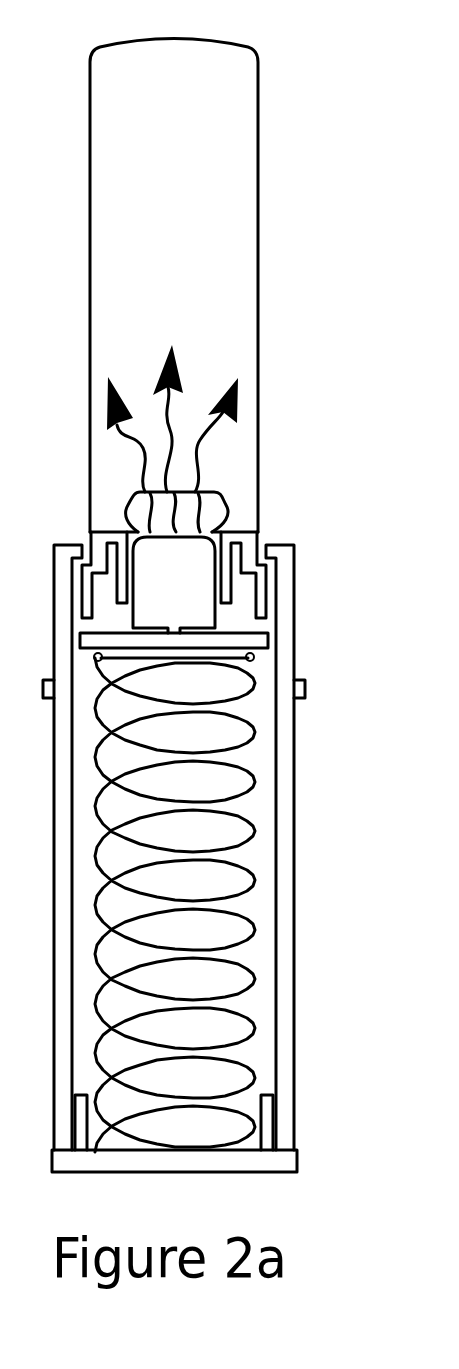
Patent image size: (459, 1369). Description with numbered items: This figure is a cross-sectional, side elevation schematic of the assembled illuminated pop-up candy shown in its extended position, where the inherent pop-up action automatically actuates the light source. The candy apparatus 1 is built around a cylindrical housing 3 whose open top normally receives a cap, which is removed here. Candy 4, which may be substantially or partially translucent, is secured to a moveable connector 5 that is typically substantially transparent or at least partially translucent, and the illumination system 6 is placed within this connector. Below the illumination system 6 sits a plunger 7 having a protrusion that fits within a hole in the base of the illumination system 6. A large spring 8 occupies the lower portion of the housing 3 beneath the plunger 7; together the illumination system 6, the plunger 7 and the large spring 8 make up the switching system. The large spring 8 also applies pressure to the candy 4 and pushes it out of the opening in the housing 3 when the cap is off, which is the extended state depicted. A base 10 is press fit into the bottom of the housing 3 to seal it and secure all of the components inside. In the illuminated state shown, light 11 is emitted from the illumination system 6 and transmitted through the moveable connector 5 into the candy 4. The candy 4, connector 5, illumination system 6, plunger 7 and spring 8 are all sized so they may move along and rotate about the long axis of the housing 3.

The candy apparatus 1 is at (276, 112).
The cylindrical housing 3 is at (294, 785).
The candy 4 is at (187, 219).
The moveable connector 5 is at (258, 532).
The illumination system 6 is at (187, 596).
The plunger 7 is at (252, 637).
The large spring 8 is at (256, 880).
The base 10 is at (282, 1167).
The light 11 is at (204, 377).